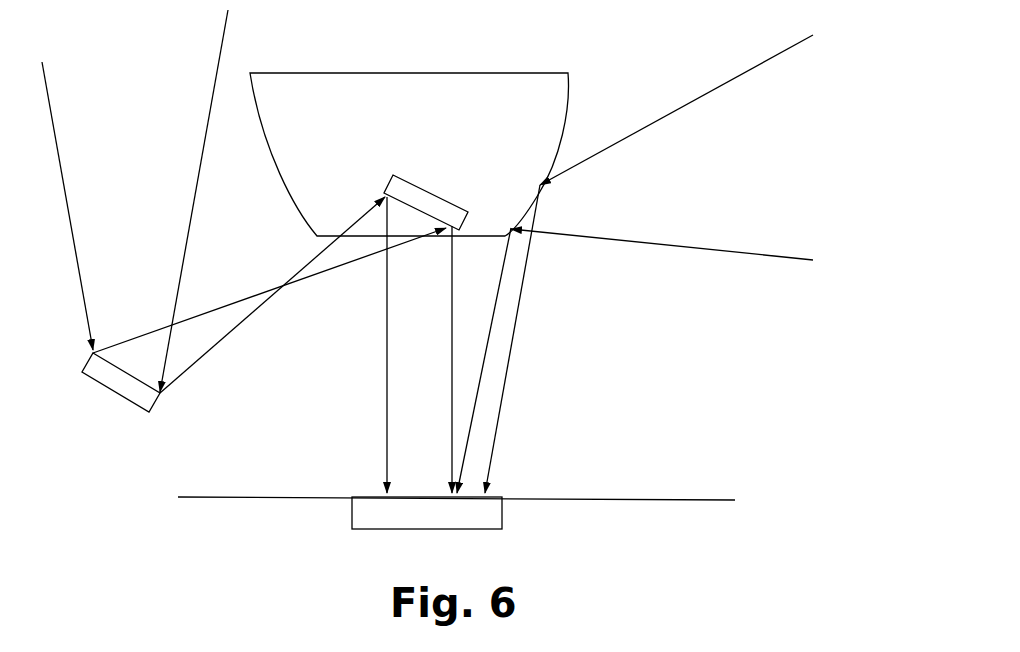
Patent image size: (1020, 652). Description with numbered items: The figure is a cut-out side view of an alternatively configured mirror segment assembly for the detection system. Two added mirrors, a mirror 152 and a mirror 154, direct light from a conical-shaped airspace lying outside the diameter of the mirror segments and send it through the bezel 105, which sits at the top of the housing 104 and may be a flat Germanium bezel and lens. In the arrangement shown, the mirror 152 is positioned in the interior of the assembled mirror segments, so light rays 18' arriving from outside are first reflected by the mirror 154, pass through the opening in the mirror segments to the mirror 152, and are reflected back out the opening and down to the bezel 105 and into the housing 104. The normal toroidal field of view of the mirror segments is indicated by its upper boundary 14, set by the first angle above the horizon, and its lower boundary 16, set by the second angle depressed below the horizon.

The light beams 18' is at (148, 201).
The mirror 152 is at (422, 185).
The mirror 154 is at (115, 397).
The lower boundary 16 is at (713, 92).
The upper boundary 14 is at (705, 250).
The housing 104 is at (456, 519).
The bezel 105 is at (420, 530).